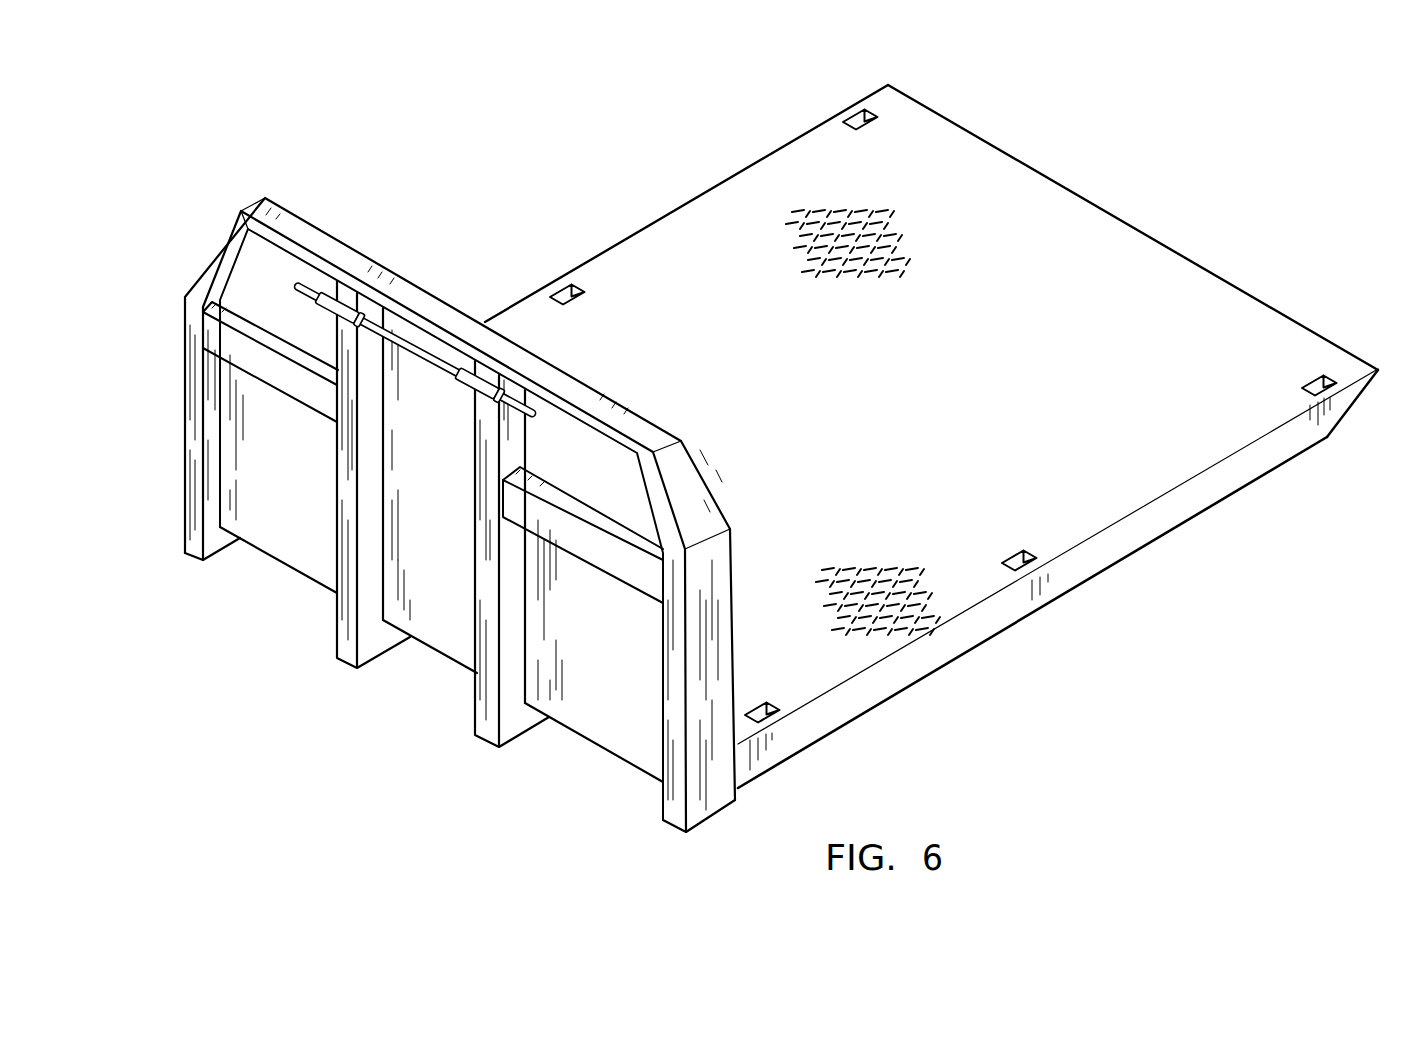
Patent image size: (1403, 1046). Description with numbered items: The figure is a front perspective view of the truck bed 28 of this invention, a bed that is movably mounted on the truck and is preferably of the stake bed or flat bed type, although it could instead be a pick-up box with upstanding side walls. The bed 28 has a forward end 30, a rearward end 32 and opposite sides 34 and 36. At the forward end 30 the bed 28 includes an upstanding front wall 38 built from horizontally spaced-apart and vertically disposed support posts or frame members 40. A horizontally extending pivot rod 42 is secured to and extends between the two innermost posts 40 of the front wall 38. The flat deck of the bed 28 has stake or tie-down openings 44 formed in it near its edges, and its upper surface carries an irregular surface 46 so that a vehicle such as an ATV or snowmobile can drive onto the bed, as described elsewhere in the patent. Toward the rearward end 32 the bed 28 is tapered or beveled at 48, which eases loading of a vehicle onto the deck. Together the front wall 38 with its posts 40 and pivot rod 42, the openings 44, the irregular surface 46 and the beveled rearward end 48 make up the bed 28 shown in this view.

The bed 28 is at (977, 94).
The forward end 30 is at (602, 773).
The rearward end 32 is at (1263, 295).
The side 34 is at (955, 638).
The side 36 is at (648, 220).
The front wall 38 is at (453, 642).
The support posts 40 is at (370, 470).
The pivot rod 42 is at (443, 373).
The stake or tie-down openings 44 is at (553, 285).
The irregular surface 46 is at (852, 233).
The beveled rearward end 48 is at (1357, 407).